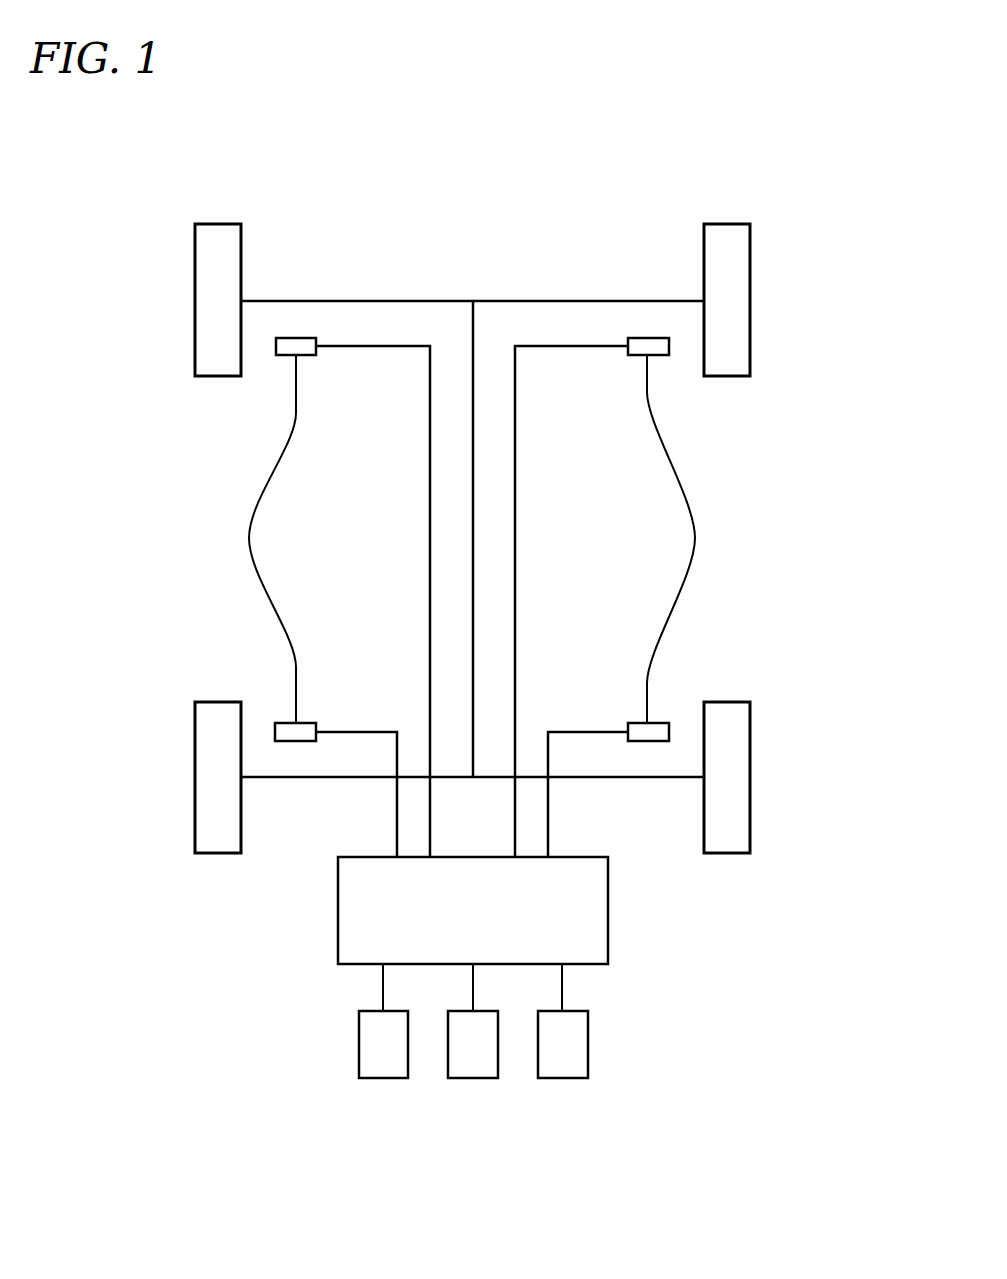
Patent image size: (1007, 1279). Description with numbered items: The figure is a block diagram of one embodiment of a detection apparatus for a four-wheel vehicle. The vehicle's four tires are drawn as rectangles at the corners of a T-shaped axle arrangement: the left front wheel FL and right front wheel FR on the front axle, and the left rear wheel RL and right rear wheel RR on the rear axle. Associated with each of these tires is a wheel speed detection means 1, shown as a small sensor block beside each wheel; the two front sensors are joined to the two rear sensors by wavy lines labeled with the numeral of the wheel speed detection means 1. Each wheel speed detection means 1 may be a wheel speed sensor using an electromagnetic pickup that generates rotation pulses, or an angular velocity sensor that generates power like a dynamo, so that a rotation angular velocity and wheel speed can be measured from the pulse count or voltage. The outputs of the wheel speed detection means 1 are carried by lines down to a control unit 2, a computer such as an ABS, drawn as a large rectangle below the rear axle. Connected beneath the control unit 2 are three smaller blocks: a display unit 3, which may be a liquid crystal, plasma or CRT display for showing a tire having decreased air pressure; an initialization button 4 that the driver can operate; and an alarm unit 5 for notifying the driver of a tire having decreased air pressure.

The wheel speed detection means 1 is at (472, 539).
The control unit 2 is at (610, 915).
The display unit 3 is at (383, 1080).
The initialization button 4 is at (473, 1080).
The alarm unit 5 is at (562, 1080).
The left front wheel FL is at (195, 281).
The right front wheel FR is at (750, 280).
The left rear wheel RL is at (195, 758).
The right rear wheel RR is at (750, 758).